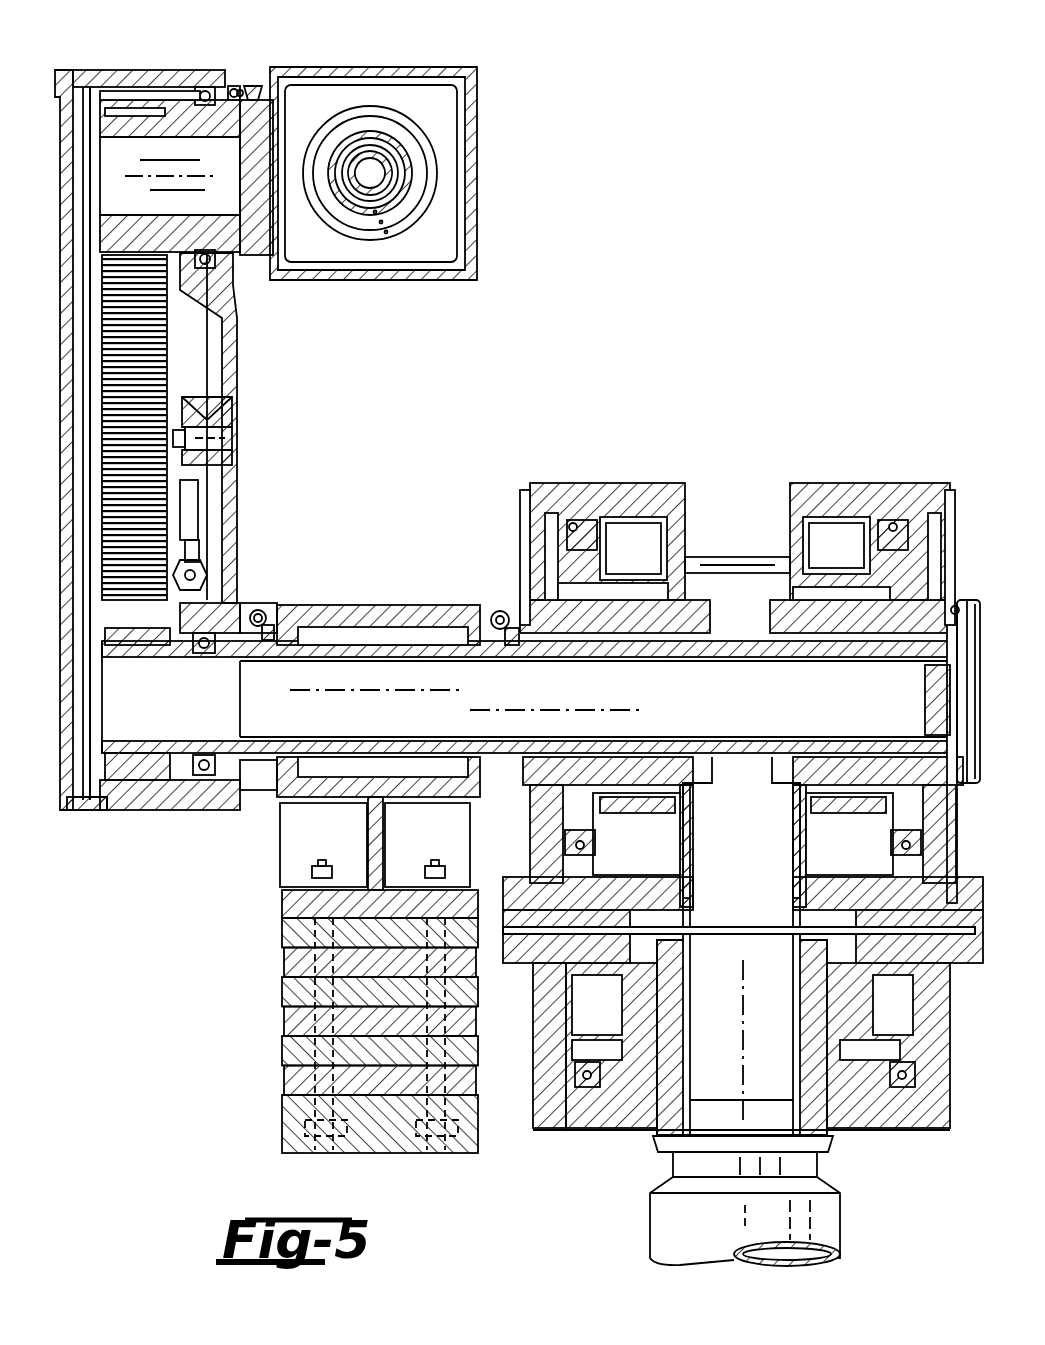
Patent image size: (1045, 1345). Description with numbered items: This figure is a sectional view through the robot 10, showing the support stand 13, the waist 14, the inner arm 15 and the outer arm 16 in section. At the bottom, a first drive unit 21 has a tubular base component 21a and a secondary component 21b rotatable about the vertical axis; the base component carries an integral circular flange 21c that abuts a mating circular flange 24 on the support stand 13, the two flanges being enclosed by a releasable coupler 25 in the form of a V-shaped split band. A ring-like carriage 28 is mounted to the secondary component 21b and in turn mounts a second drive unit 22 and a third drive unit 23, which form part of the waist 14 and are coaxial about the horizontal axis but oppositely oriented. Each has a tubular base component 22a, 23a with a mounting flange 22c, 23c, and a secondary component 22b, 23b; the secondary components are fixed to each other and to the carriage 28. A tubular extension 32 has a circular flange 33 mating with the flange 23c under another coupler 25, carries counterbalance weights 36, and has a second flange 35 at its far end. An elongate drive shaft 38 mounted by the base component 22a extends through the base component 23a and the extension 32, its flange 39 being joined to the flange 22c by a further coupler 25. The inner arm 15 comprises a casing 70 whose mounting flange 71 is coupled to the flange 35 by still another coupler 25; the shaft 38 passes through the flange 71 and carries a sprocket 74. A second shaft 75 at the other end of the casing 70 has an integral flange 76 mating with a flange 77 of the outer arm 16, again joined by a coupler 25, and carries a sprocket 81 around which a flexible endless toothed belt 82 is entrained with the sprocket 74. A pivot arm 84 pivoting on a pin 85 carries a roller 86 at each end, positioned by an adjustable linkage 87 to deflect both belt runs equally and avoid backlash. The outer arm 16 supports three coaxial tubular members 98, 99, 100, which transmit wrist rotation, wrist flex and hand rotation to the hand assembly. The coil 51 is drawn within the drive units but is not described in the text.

The robot 10 is at (834, 226).
The support stand 13 is at (640, 1238).
The waist 14 is at (585, 1180).
The inner arm 15 is at (72, 68).
The outer arm 16 is at (488, 176).
The first drive unit 21 is at (733, 947).
The tubular base component 21a is at (781, 999).
The secondary component 21b is at (542, 1018).
The circular flange 21c is at (790, 1138).
The second drive unit 22 is at (889, 689).
The tubular base component 22a is at (825, 634).
The secondary component 22b is at (836, 500).
The mounting flange 22c is at (950, 600).
The third drive unit 23 is at (596, 689).
The tubular base component 23a is at (655, 634).
The secondary component 23b is at (575, 505).
The mounting flange 23c is at (522, 612).
The circular flange 24 is at (727, 1156).
The releasable coupler 25 is at (240, 86).
The ring-like carriage 28 is at (690, 928).
The tubular extension 32 is at (405, 605).
The circular flange 33 is at (495, 610).
The second flange 35 is at (272, 622).
The weights 36 is at (283, 1042).
The drive shaft 38 is at (372, 719).
The flange 39 is at (978, 772).
The coil 51 is at (600, 543).
The casing 70 is at (238, 340).
The mounting flange 71 is at (256, 608).
The sprocket 74 is at (142, 645).
The second shaft 75 is at (246, 201).
The integral flange 76 is at (230, 86).
The flange 77 is at (252, 86).
The sprocket 81 is at (130, 112).
The flexible endless toothed belt 82 is at (150, 330).
The pivot arm 84 is at (215, 397).
The pin 85 is at (220, 430).
The roller 86 is at (92, 470).
The adjustable linkage 87 is at (200, 530).
The first tubular member 98 is at (376, 214).
The second tubular member 99 is at (382, 224).
The third tubular member 100 is at (388, 234).